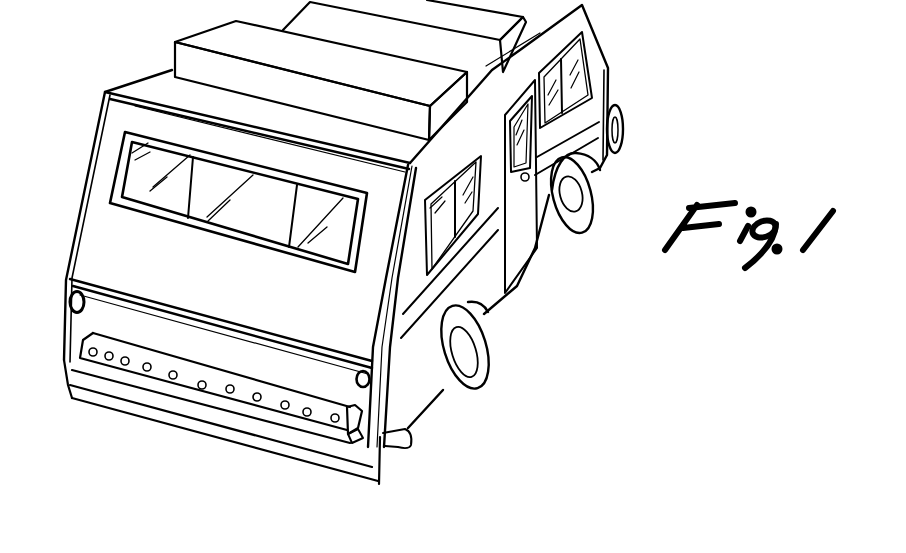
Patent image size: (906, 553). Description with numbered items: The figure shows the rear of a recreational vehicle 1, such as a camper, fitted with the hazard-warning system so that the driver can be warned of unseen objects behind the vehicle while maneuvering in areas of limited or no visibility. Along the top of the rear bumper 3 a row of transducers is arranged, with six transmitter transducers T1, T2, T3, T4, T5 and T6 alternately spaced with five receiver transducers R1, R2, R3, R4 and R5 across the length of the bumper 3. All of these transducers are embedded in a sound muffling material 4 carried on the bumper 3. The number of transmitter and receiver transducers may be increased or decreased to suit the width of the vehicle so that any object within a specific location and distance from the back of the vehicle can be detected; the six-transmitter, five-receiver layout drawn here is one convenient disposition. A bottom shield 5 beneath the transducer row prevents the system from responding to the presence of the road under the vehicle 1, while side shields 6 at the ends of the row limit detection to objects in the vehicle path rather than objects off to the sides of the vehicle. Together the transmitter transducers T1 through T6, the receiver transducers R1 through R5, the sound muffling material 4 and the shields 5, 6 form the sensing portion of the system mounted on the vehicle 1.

The vehicle 1 is at (618, 90).
The bumper 3 is at (411, 446).
The sound muffling material 4 is at (323, 424).
The bottom shield 5 is at (355, 447).
The side shields 6 is at (93, 333).
The transmitter transducer T1 is at (94, 348).
The transmitter transducer T2 is at (125, 357).
The transmitter transducer T3 is at (174, 371).
The transmitter transducer T4 is at (232, 385).
The transmitter transducer T5 is at (286, 401).
The transmitter transducer T6 is at (337, 414).
The receiver transducer R1 is at (110, 351).
The receiver transducer R2 is at (147, 363).
The receiver transducer R3 is at (203, 381).
The receiver transducer R4 is at (258, 393).
The receiver transducer R5 is at (308, 408).